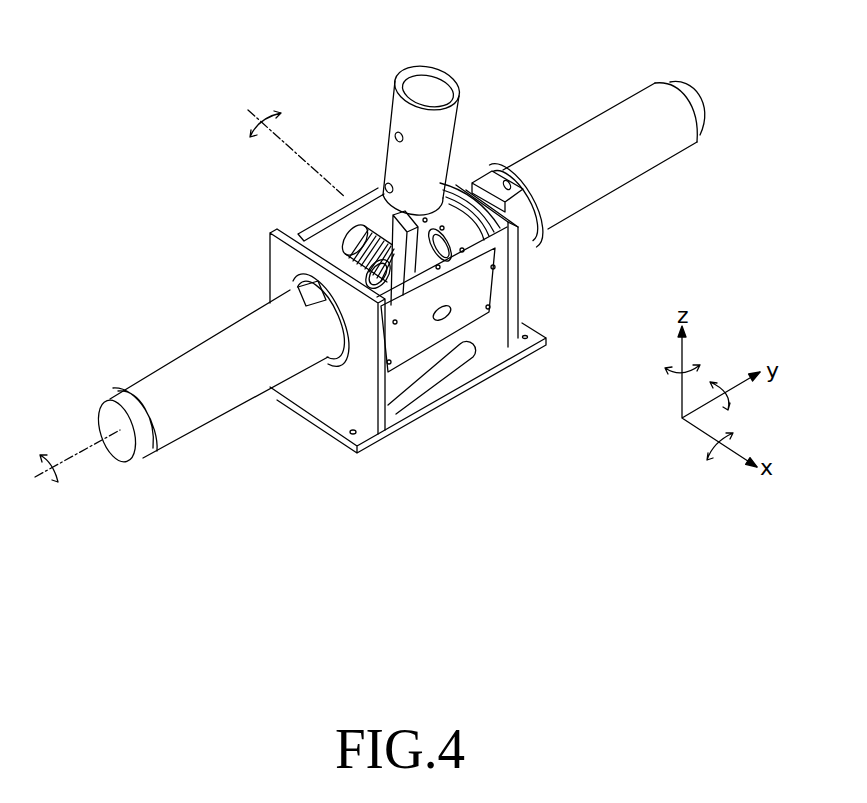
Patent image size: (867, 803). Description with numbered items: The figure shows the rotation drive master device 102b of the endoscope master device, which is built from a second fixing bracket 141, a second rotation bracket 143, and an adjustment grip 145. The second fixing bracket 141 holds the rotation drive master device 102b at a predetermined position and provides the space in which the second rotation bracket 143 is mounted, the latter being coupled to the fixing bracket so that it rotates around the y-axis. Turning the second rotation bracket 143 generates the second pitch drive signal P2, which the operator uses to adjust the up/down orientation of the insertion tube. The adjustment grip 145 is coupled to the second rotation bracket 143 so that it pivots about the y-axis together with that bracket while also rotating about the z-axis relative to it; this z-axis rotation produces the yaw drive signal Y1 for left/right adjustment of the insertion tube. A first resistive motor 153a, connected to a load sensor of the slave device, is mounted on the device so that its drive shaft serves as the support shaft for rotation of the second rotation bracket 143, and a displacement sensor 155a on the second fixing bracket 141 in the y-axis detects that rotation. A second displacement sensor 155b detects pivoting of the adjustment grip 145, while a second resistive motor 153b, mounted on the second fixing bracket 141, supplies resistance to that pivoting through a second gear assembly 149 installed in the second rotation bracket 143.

The rotation drive master device 102b is at (114, 205).
The second fixing bracket 141 is at (545, 350).
The second rotation bracket 143 is at (407, 305).
The adjustment grip 145 is at (409, 79).
The second gear assembly 149 is at (402, 352).
The first resistive motor 153a is at (660, 148).
The second resistive motor 153b is at (175, 427).
The displacement sensor 155a is at (489, 183).
The displacement sensor 155b is at (329, 332).
The yaw drive signal Y1 is at (280, 150).
The second pitch drive signal P2 is at (72, 472).